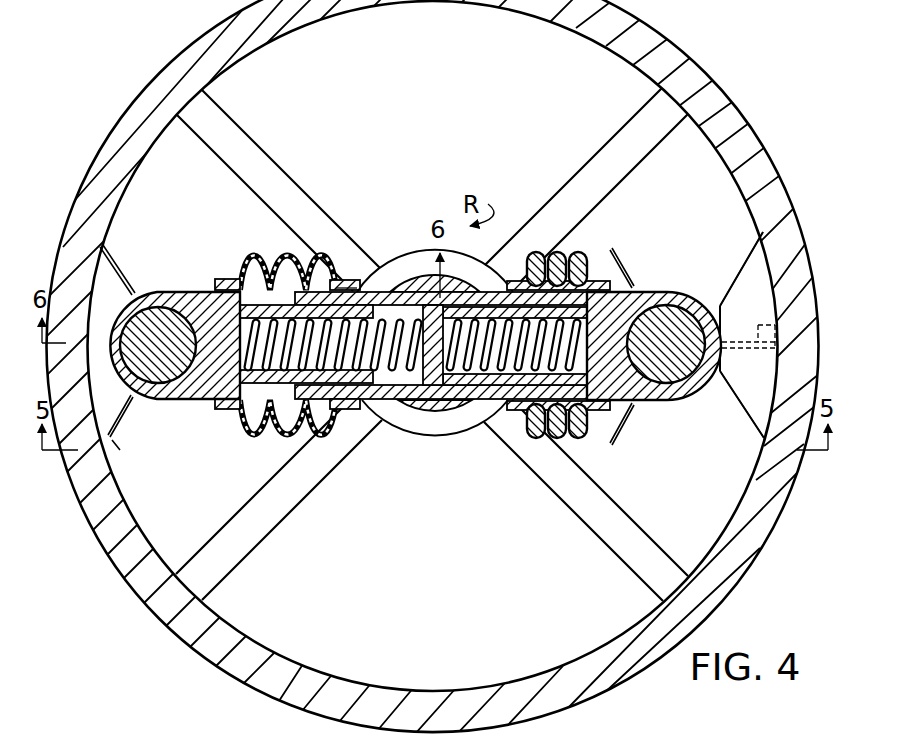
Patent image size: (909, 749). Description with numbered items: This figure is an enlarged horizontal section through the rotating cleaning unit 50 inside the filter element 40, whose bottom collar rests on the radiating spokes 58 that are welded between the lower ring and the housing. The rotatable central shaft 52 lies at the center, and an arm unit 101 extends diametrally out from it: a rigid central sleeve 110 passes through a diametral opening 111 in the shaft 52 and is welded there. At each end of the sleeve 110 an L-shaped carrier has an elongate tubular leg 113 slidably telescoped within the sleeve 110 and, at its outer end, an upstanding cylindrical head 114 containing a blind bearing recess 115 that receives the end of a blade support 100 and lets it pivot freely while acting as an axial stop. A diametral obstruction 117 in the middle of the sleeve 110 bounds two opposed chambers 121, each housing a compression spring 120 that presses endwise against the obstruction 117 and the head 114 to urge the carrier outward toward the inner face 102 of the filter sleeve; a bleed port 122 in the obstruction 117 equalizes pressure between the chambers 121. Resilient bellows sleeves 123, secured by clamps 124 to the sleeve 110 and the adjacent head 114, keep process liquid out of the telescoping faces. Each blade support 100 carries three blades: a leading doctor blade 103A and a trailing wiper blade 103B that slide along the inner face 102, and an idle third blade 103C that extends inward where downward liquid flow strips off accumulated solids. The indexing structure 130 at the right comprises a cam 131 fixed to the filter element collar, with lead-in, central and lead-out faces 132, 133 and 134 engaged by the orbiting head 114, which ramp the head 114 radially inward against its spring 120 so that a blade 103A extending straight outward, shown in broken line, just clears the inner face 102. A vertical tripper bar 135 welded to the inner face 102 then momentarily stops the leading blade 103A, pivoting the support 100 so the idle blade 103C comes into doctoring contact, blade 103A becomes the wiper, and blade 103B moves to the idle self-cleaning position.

The filter element 40 is at (102, 142).
The rotating cleaning unit 50 is at (221, 250).
The shaft 52 is at (474, 412).
The spokes 58 is at (603, 150).
The blade support 100 is at (657, 318).
The arm units 101 is at (592, 450).
The inner face 102 is at (118, 212).
The doctor blade 103A is at (123, 418).
The wiper blade 103B is at (115, 276).
The third blade 103C is at (620, 258).
The central sleeve 110 is at (370, 288).
The diametral opening 111 is at (390, 281).
The tubular leg 113 is at (273, 264).
The cylindrical head 114 is at (168, 396).
The bearing recess 115 is at (195, 358).
The obstruction 117 is at (425, 291).
The compression spring 120 is at (486, 326).
The chamber 121 is at (423, 413).
The bleed port 122 is at (459, 413).
The bellows sleeves 123 is at (296, 266).
The clamps 124 is at (234, 407).
The indexing structure 130 is at (721, 446).
The cams 131 is at (798, 214).
The lead-in face 132 is at (748, 416).
The central face 133 is at (702, 310).
The lead-out face 134 is at (758, 275).
The tripper bar 135 is at (745, 355).